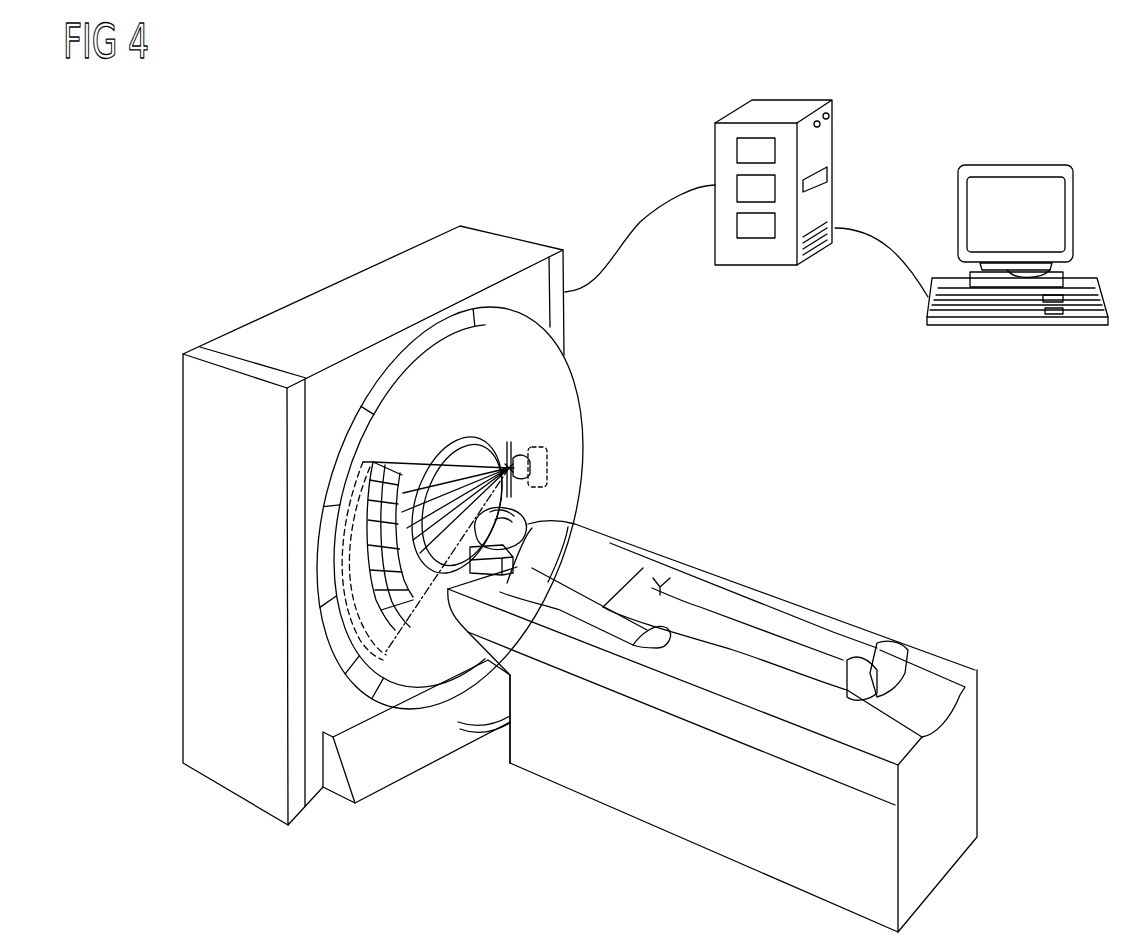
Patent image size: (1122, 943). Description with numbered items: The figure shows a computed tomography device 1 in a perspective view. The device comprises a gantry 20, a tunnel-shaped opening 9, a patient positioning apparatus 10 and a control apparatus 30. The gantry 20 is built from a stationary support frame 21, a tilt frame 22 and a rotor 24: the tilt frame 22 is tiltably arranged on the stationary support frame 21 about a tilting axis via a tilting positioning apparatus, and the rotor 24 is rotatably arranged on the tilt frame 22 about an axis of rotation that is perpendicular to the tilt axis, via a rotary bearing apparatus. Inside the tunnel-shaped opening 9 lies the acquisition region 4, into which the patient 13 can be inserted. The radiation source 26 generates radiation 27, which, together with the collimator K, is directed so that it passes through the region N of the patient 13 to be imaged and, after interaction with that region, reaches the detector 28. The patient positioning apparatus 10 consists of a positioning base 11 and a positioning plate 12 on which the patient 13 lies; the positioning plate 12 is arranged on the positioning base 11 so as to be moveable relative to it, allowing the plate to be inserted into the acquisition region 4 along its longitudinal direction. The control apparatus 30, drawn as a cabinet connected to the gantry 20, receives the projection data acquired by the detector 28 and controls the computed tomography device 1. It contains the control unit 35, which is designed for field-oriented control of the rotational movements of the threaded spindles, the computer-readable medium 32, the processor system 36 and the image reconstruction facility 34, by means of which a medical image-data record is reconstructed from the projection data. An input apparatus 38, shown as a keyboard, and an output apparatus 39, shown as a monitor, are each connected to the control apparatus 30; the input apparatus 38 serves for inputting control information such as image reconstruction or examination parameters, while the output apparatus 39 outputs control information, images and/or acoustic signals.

The computed tomography device 1 is at (386, 186).
The acquisition region 4 is at (447, 463).
The tunnel-shaped opening 9 is at (462, 505).
The patient positioning apparatus 10 is at (699, 891).
The positioning base 11 is at (627, 787).
The positioning plate 12 is at (940, 668).
The patient 13 is at (829, 650).
The gantry 20 is at (148, 579).
The stationary support frame 21 is at (236, 771).
The tilt frame 22 is at (346, 302).
The rotor 24 is at (470, 362).
The radiation source 26 is at (552, 462).
The radiation 27 is at (484, 445).
The detector 28 is at (388, 644).
The control apparatus 30 is at (777, 105).
The computer-readable medium 32 is at (828, 182).
The image reconstruction facility 34 is at (737, 152).
The control unit 35 is at (737, 187).
The processor system 36 is at (753, 242).
The input apparatus 38 is at (1008, 316).
The output apparatus 39 is at (1016, 165).
The collimator K is at (511, 441).
The region of the patient to be imaged N is at (588, 542).